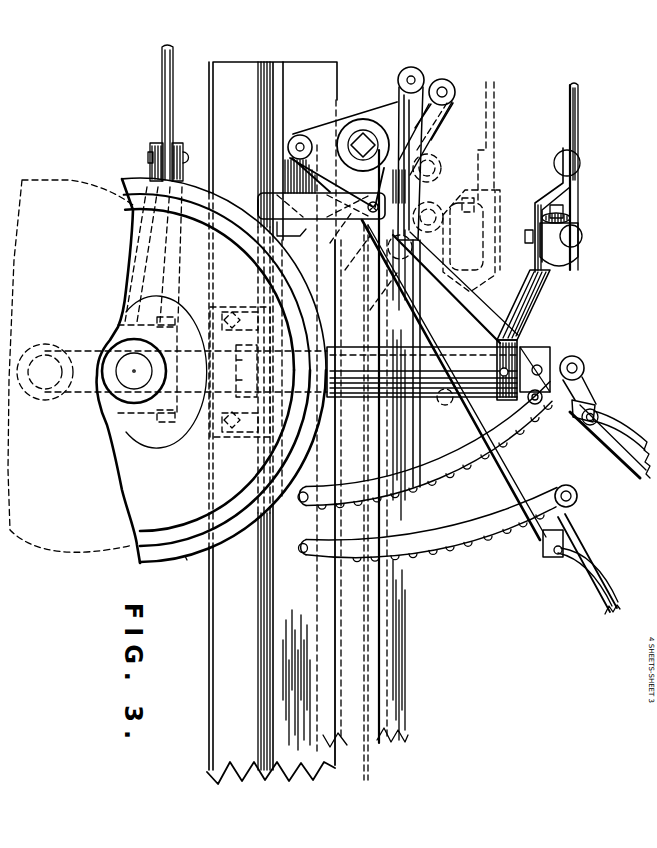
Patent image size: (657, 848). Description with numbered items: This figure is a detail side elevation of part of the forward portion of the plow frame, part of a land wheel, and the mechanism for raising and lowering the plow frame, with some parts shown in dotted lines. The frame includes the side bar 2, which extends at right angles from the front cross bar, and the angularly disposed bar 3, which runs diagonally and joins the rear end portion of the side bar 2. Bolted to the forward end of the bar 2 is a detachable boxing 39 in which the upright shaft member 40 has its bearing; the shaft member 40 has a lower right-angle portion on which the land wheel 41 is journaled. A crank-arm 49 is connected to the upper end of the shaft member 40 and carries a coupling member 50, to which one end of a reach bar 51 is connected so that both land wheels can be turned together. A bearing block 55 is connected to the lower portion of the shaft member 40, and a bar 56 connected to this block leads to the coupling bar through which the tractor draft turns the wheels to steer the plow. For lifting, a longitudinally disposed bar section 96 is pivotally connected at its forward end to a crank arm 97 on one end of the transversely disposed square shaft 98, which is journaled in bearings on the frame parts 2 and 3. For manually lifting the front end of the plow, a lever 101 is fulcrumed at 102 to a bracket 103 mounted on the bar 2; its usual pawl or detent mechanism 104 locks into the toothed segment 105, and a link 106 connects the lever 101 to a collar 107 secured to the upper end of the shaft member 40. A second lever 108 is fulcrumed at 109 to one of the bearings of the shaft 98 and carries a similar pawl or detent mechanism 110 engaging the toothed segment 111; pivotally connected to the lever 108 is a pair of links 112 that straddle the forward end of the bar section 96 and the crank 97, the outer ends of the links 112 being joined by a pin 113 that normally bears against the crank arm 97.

The side bar 2 is at (271, 403).
The angularly disposed bar 3 is at (314, 398).
The boxing 39 is at (240, 391).
The upright shaft member 40 is at (422, 396).
The land wheel 41 is at (185, 582).
The crank-arm 49 is at (543, 244).
The coupling member 50 is at (568, 246).
The reach bar 51 is at (579, 176).
The bearing block 55 is at (91, 354).
The bar 56 is at (160, 113).
The bar section 96 is at (401, 465).
The crank arm 97 is at (439, 120).
The square shaft 98 is at (363, 130).
The lever 101 is at (588, 604).
The fulcrum 102 is at (342, 150).
The bracket 103 is at (311, 187).
The pawl or detent mechanism 104 is at (572, 564).
The toothed segment 105 is at (438, 550).
The link 106 is at (543, 434).
The collar 107 is at (530, 358).
The lever 108 is at (608, 451).
The fulcrum 109 is at (262, 149).
The pawl or detent mechanism 110 is at (605, 417).
The toothed segment 111 is at (425, 451).
The links 112 is at (404, 250).
The pin 113 is at (425, 98).